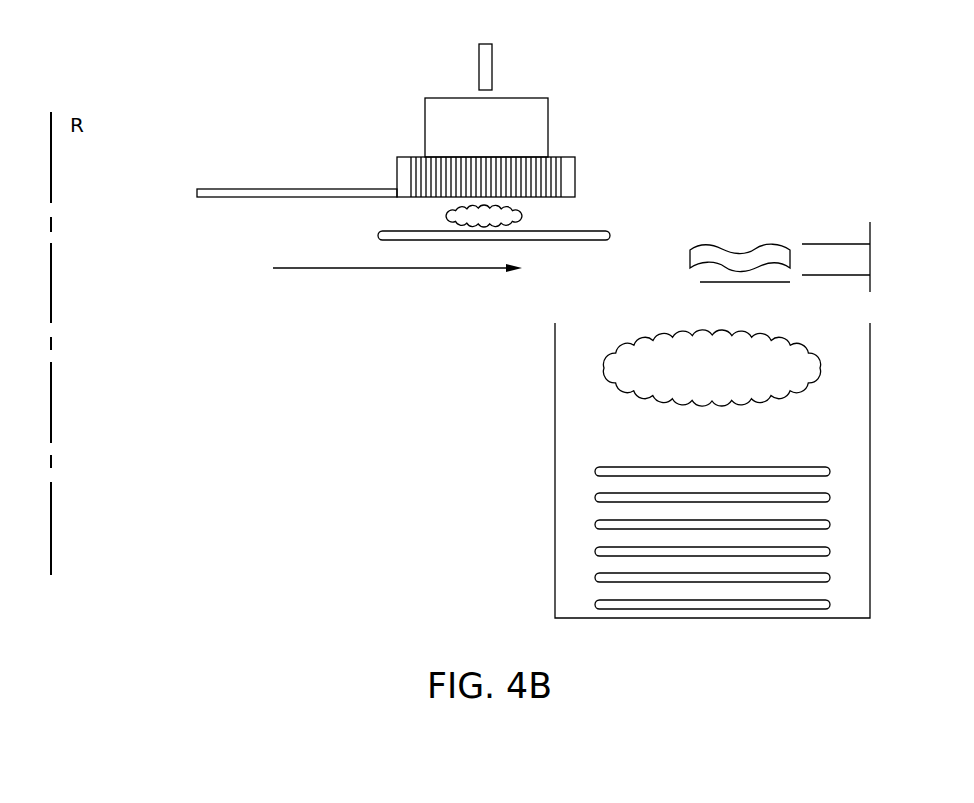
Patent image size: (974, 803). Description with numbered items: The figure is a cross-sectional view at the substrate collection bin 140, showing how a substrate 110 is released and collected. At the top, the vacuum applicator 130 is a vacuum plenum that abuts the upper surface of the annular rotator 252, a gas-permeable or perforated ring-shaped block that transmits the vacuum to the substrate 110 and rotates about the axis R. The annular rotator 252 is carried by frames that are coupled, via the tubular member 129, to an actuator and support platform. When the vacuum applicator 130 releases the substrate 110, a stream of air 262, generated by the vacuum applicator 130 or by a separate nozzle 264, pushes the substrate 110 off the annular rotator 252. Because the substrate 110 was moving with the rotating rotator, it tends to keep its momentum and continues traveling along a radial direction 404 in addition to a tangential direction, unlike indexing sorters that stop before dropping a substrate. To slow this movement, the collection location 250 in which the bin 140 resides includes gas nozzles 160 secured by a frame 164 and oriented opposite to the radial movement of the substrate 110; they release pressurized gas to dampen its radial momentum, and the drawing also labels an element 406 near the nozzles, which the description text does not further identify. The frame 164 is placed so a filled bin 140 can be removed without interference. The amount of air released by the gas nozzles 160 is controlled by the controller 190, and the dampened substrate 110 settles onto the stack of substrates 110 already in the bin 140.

The substrate 110 is at (605, 231).
The tubular member 129 is at (333, 189).
The vacuum applicator 130 is at (506, 138).
The substrate collection bin 140 is at (870, 452).
The second gas nozzles 160 is at (832, 244).
The frame 164 is at (870, 262).
The controller 190 is at (732, 381).
The collection location 250 is at (846, 70).
The annular rotator 252 is at (554, 155).
The stream of air 262 is at (444, 218).
The nozzle 264 is at (479, 61).
The radial direction 404 is at (373, 268).
The bent substrate 406 is at (752, 283).